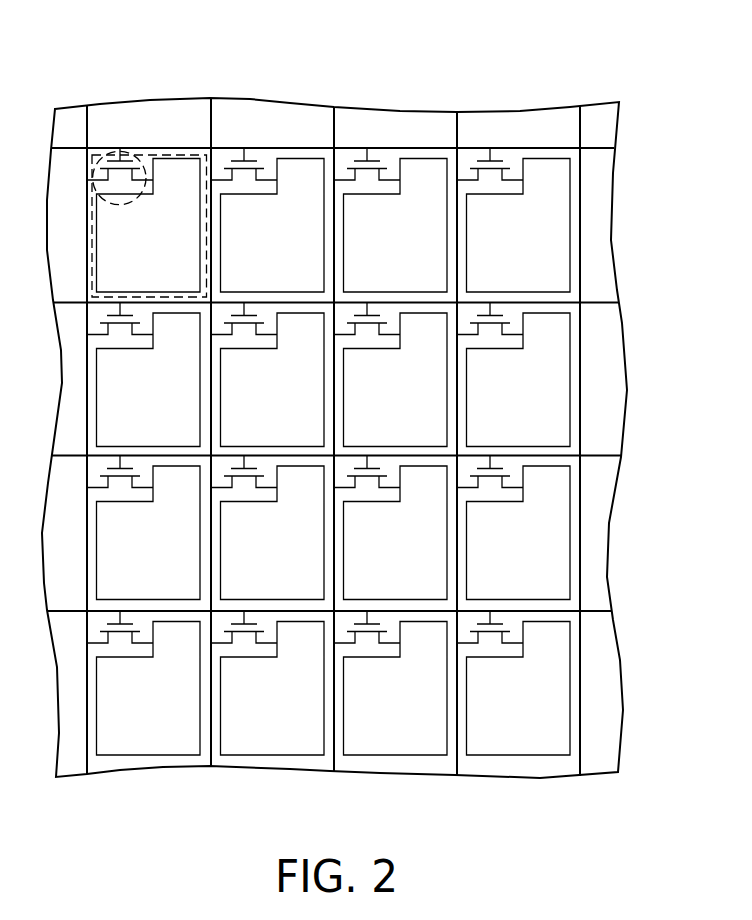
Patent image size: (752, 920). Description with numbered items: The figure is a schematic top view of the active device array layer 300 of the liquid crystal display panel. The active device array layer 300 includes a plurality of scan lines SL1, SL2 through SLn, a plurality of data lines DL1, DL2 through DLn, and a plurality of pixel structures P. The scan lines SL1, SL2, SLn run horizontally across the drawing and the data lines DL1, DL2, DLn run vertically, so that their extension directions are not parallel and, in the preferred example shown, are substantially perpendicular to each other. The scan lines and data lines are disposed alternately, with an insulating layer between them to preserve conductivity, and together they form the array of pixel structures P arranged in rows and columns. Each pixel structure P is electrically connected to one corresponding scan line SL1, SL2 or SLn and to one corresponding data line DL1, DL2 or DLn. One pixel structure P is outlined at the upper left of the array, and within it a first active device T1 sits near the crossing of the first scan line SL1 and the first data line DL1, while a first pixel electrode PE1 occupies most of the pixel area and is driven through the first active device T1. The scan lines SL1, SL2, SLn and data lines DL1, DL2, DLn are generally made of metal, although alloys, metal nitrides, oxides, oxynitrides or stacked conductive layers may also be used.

The active device array layer 300 is at (622, 836).
The data line DL1 is at (87, 130).
The data line DL2 is at (211, 123).
The data line DLn is at (580, 128).
The scan line SL1 is at (598, 148).
The scan line SL2 is at (598, 302).
The scan line SLn is at (600, 610).
The pixel structure P is at (173, 152).
The first pixel electrode PE1 is at (188, 172).
The first active device T1 is at (146, 165).